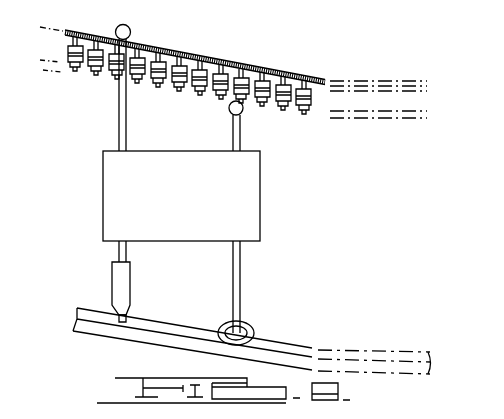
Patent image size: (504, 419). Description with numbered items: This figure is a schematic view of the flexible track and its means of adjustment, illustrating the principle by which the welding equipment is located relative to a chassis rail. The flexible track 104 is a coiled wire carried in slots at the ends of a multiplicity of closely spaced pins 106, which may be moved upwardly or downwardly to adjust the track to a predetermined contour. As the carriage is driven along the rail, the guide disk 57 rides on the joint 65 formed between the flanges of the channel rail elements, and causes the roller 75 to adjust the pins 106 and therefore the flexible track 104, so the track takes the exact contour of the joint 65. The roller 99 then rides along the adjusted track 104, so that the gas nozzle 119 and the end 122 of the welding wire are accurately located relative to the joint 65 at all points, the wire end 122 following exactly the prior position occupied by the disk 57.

The roller 99 is at (129, 31).
The flexible track 104 is at (170, 49).
The pins 106 is at (290, 75).
The roller 75 is at (244, 112).
The gas nozzle 119 is at (124, 276).
The end of the welding wire 122 is at (127, 321).
The joint 65 is at (152, 333).
The guide disk 57 is at (254, 326).